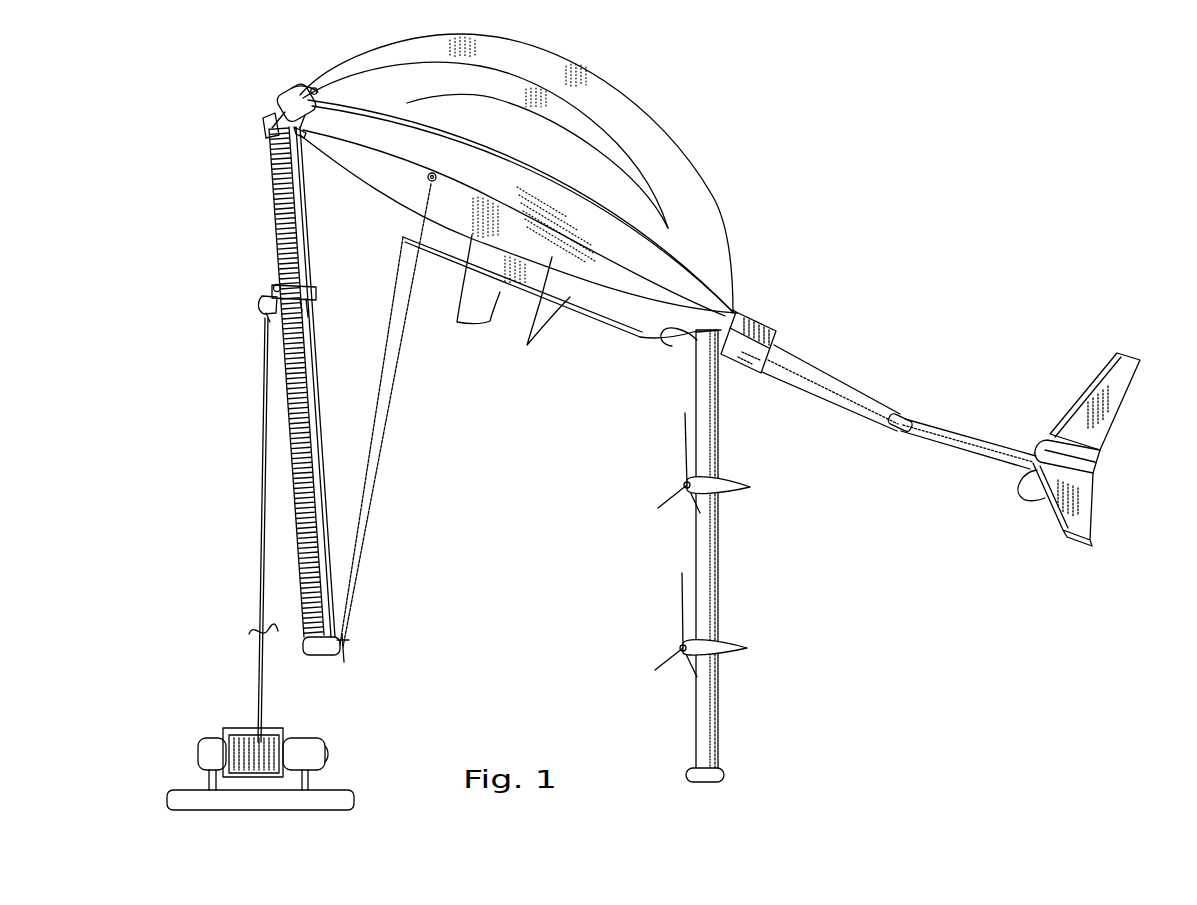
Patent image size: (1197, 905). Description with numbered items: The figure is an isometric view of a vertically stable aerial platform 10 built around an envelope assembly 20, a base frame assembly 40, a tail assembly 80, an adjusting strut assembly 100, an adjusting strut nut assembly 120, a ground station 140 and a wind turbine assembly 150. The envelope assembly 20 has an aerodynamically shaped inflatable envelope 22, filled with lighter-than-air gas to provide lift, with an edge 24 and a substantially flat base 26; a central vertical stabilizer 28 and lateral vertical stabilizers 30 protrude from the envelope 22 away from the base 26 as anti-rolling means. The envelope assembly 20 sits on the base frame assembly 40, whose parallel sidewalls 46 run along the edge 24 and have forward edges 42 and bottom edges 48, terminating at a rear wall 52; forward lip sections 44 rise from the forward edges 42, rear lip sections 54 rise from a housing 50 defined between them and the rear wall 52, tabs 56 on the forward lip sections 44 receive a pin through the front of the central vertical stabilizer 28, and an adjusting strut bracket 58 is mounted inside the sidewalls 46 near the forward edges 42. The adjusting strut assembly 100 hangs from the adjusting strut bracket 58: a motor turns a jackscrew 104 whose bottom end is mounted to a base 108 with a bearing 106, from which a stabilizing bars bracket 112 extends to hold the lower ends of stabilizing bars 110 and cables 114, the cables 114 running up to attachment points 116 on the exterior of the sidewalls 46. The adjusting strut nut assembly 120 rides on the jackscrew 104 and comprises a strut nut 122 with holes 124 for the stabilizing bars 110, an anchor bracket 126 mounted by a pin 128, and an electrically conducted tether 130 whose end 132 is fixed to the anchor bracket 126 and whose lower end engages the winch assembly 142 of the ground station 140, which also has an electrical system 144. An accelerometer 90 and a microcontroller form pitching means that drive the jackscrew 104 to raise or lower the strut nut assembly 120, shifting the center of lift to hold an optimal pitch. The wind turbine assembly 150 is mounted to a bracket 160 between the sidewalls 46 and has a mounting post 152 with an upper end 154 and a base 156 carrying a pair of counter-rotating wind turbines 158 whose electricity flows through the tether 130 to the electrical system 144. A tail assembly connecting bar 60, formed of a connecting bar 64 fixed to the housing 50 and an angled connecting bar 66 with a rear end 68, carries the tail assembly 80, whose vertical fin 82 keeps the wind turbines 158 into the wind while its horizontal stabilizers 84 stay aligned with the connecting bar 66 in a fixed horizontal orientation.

The vertically stable aerial platform 10 is at (910, 84).
The envelope assembly 20 is at (571, 206).
The envelope 22 is at (690, 233).
The edge 24 is at (690, 260).
The base 26 is at (390, 131).
The central vertical stabilizer 28 is at (607, 90).
The lateral vertical stabilizers 30 is at (617, 147).
The base frame assembly 40 is at (802, 327).
The forward edges 42 is at (292, 97).
The forward lip sections 44 is at (298, 89).
The sidewalls 46 is at (527, 345).
The bottom edges 48 is at (457, 323).
The housing 50 is at (737, 363).
The rear wall 52 is at (778, 342).
The rear lip sections 54 is at (763, 313).
The tabs 56 is at (303, 87).
The adjusting strut bracket 58 is at (266, 121).
The tail assembly connecting bar 60 is at (967, 449).
The connecting bar 64 is at (881, 416).
The connecting bar 66 is at (993, 452).
The rear end 68 is at (1033, 457).
The tail assembly 80 is at (1056, 449).
The vertical fin 82 is at (1110, 376).
The horizontal stabilizers 84 is at (1083, 463).
The accelerometer 90 is at (302, 136).
The adjusting strut assembly 100 is at (289, 414).
The jackscrew 104 is at (276, 212).
The bearing 106 is at (300, 646).
The base 108 is at (347, 658).
The stabilizing bars 110 is at (313, 374).
The stabilizing bars bracket 112 is at (346, 644).
The cables 114 is at (382, 452).
The attachment points 116 is at (428, 181).
The adjusting strut nut assembly 120 is at (244, 311).
The strut nut 122 is at (300, 290).
The holes 124 is at (306, 318).
The anchor bracket 126 is at (262, 300).
The pin 128 is at (272, 287).
The electrically conducted tether 130 is at (264, 478).
The end 132 is at (268, 318).
The ground station 140 is at (247, 727).
The winch assembly 142 is at (205, 745).
The electrical system 144 is at (312, 745).
The wind turbine assembly 150 is at (604, 509).
The mounting post 152 is at (707, 392).
The upper end 154 is at (700, 378).
The base 156 is at (726, 775).
The wind turbines 158 is at (723, 490).
The bracket 160 is at (663, 334).